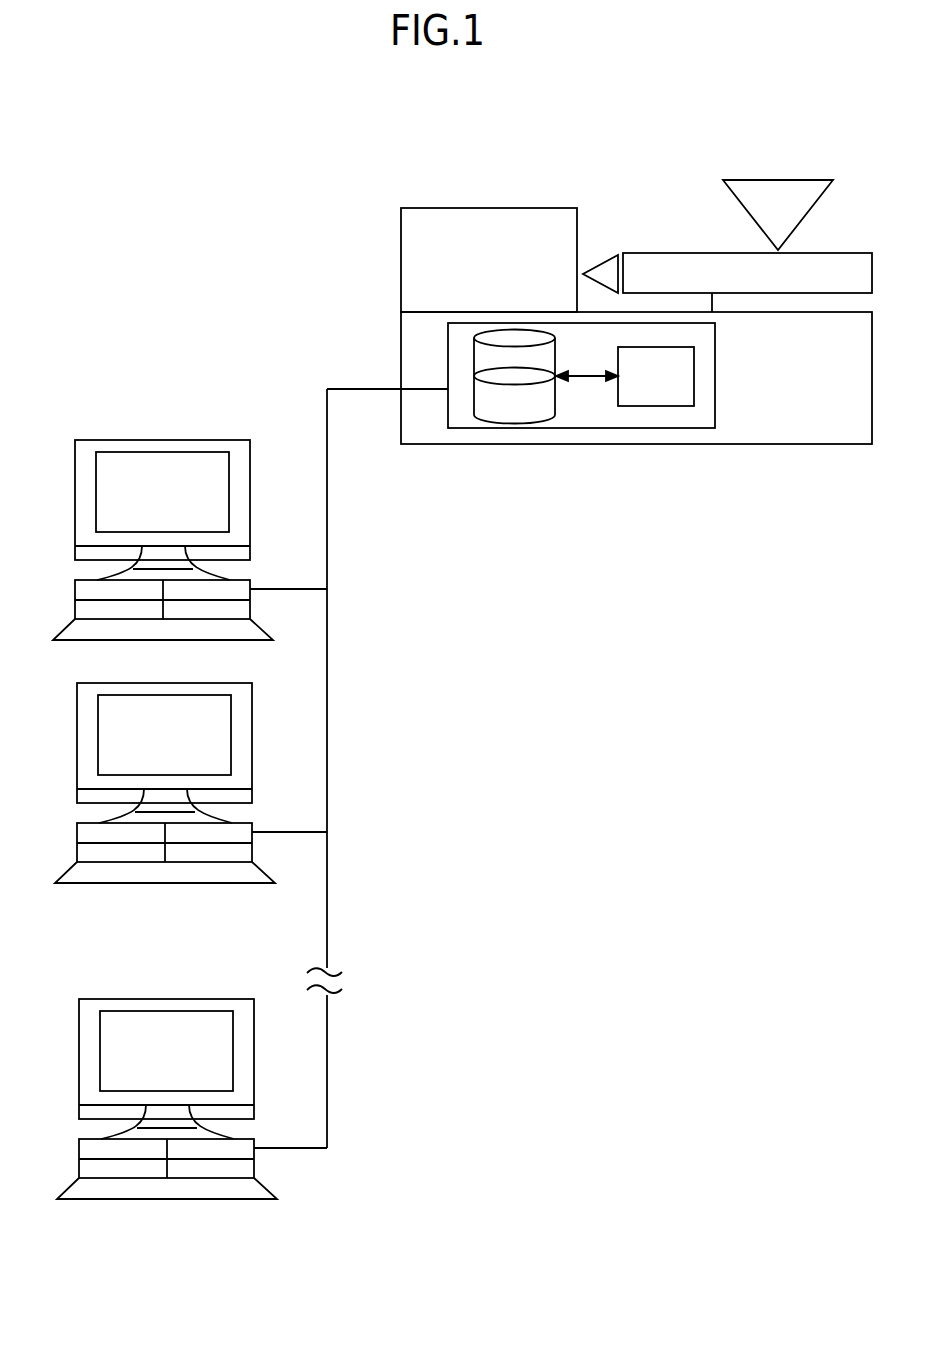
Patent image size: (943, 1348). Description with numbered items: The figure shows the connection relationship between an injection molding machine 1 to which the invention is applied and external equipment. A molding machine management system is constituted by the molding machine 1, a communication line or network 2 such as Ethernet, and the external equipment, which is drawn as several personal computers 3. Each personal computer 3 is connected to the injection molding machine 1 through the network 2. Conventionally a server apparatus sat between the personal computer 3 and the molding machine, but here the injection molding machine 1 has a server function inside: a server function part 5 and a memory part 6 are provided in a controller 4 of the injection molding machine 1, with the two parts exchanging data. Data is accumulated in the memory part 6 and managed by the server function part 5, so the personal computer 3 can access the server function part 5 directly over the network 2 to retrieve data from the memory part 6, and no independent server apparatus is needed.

The injection molding machine 1 is at (591, 166).
The network 2 is at (328, 661).
The personal computer 3 is at (75, 488).
The controller 4 is at (585, 428).
The server function part 5 is at (663, 406).
The memory part 6 is at (513, 403).